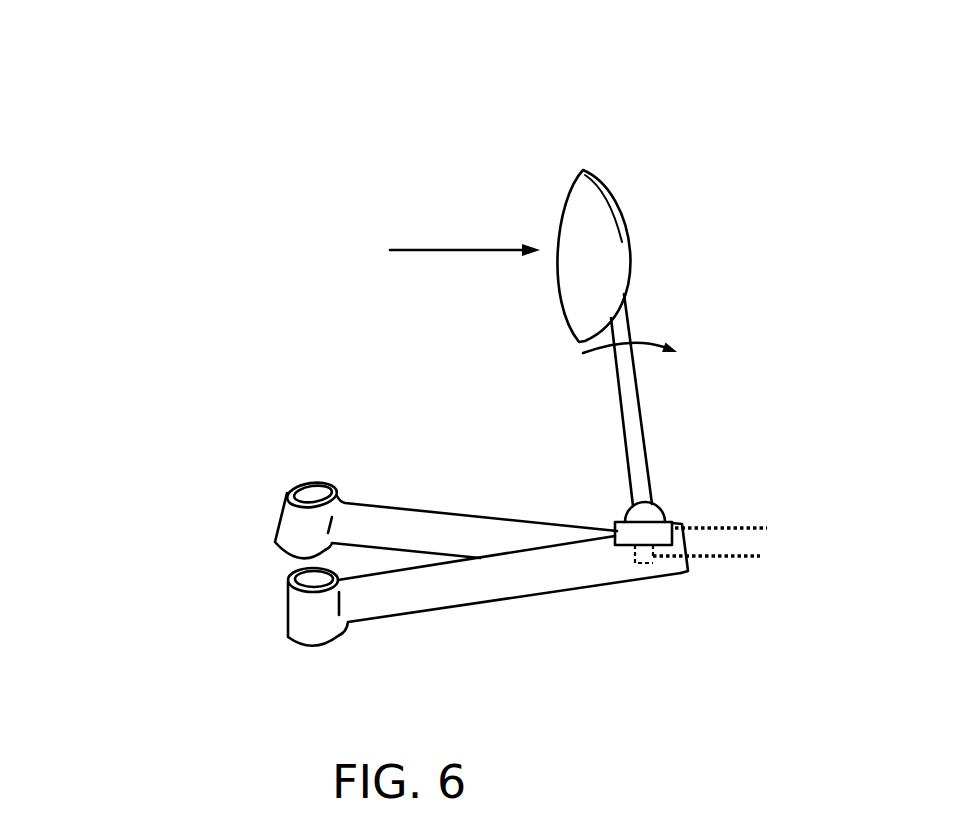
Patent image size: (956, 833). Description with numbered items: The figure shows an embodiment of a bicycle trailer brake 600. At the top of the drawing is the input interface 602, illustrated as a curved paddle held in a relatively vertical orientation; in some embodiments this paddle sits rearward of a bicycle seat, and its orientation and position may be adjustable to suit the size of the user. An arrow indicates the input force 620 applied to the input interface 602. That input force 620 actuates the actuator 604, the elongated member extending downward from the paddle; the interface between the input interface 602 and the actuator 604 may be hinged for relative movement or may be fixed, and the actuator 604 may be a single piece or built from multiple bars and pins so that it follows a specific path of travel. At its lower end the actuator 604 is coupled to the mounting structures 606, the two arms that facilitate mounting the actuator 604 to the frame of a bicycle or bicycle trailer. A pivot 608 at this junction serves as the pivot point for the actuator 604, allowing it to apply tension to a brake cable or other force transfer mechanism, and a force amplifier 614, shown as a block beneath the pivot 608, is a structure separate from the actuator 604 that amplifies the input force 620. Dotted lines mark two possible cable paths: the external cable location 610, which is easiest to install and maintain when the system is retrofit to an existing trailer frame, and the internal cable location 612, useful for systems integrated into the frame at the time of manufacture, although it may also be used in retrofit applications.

The bicycle trailer brake 600 is at (165, 52).
The input interface 602 is at (559, 188).
The actuator 604 is at (643, 412).
The mounting structures 606 is at (455, 515).
The pivot 608 is at (662, 512).
The external cable location 610 is at (735, 527).
The internal cable location 612 is at (758, 555).
The force amplifier 614 is at (612, 528).
The input force 620 is at (420, 250).